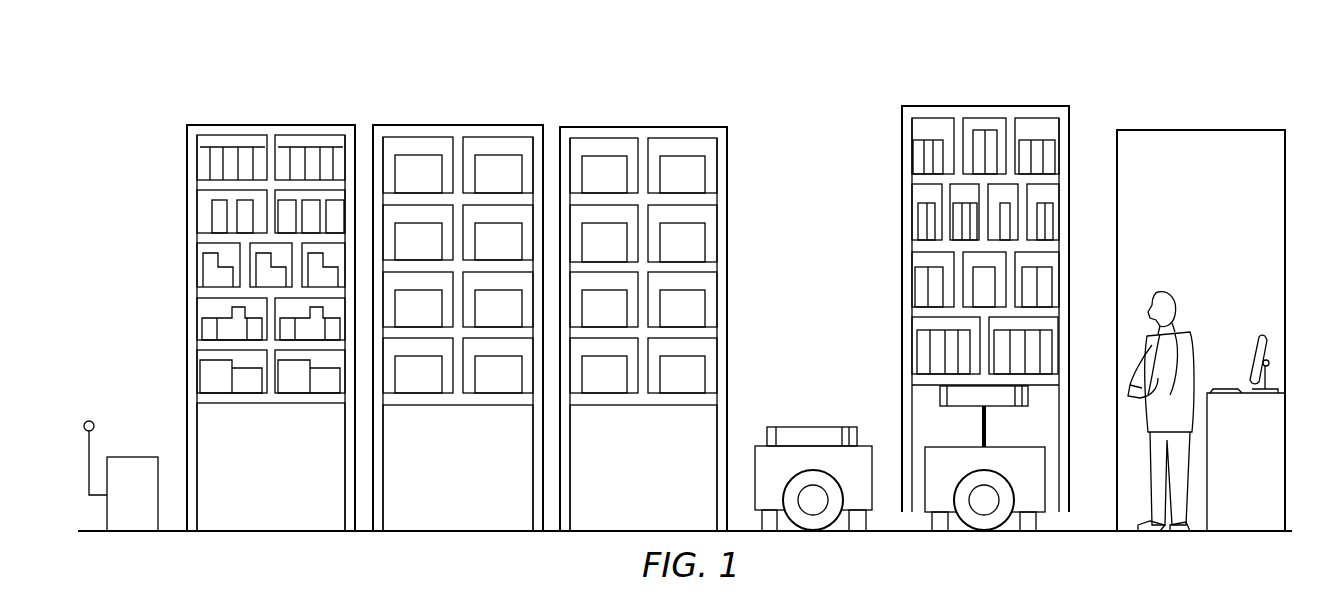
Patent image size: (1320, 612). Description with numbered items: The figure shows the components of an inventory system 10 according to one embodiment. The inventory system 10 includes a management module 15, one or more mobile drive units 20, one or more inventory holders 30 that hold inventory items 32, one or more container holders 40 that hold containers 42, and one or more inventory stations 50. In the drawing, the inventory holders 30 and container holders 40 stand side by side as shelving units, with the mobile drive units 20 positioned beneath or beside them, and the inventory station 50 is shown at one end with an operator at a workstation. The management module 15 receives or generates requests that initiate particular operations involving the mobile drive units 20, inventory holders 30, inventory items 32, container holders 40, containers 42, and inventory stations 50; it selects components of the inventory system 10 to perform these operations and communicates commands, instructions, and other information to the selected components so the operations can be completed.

The inventory system 10 is at (890, 64).
The management module 15 is at (146, 508).
The mobile drive unit 20 is at (835, 427).
The inventory holder 30 is at (238, 121).
The inventory item 32 is at (202, 160).
The container holder 40 is at (424, 122).
The container 42 is at (697, 177).
The inventory station 50 is at (1233, 125).